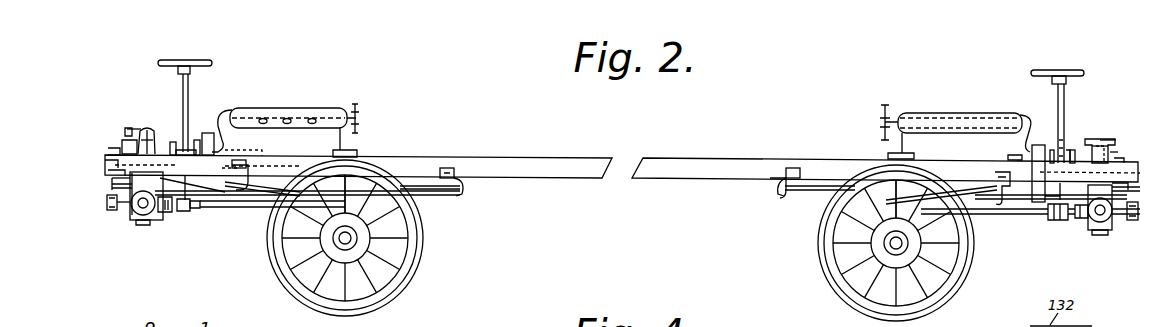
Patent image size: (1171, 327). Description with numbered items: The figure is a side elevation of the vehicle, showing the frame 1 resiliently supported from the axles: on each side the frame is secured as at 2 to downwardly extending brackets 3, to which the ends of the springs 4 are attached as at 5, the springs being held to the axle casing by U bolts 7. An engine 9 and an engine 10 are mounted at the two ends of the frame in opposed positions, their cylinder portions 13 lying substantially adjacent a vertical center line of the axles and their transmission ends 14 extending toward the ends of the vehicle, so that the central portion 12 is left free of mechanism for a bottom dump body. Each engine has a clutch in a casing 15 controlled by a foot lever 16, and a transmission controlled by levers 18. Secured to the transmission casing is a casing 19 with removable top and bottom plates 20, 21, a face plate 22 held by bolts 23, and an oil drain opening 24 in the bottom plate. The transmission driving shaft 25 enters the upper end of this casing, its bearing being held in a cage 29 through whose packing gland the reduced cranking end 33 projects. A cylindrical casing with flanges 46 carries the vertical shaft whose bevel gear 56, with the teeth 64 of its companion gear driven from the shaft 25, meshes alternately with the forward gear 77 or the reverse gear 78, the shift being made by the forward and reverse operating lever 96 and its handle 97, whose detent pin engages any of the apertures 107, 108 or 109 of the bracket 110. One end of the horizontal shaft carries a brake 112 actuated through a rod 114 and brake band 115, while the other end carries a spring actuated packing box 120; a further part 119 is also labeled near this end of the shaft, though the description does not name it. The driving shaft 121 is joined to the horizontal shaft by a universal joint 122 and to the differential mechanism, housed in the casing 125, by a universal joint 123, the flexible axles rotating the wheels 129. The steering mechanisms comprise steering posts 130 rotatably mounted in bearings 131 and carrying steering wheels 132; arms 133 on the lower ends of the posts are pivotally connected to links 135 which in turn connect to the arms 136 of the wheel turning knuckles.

The frame 1 is at (661, 158).
The securing point of brackets to frame 2 is at (246, 166).
The downwardly extending brackets 3 is at (249, 180).
The springs 4 is at (442, 192).
The spring attachment points 5 is at (232, 196).
The U bolts 7 is at (360, 188).
The engine 9 is at (280, 108).
The engine 10 is at (940, 113).
The central portion 12 is at (1080, 183).
The cylinder portions 13 is at (352, 108).
The transmission end 14 is at (172, 142).
The clutch casing 15 is at (234, 112).
The foot lever 16 is at (209, 133).
The transmission levers 18 is at (197, 140).
The casing 19 is at (112, 179).
The top removable plate 20 is at (1112, 158).
The bottom removable plate 21 is at (163, 213).
The face plate 22 is at (113, 187).
The bolts 23 is at (136, 220).
The opening 24 is at (143, 222).
The transmission driving shaft 25 is at (110, 150).
The bearing cage 29 is at (108, 172).
The reduced cranking end 33 is at (106, 162).
The flanges 46 is at (143, 129).
The bevel gear 56 is at (192, 191).
The teeth 64 is at (131, 216).
The forward gear 77 is at (145, 226).
The reverse gear 78 is at (183, 213).
The forward and reverse operating lever 96 is at (1104, 144).
The handle 97 is at (151, 130).
The aperture 107 is at (128, 128).
The aperture 108 is at (139, 127).
The aperture 109 is at (1106, 138).
The bracket 110 is at (128, 140).
The brake 112 is at (107, 205).
The rod 114 is at (110, 183).
The brake band 115 is at (117, 208).
The rod 119 is at (1067, 145).
The spring actuated packing box 120 is at (180, 212).
The driving shaft 121 is at (222, 208).
The universal joint 122 is at (195, 209).
The universal joint 123 is at (283, 257).
The casing 125 is at (404, 262).
The wheels 129 is at (401, 292).
The steering posts 130 is at (189, 94).
The bearings 131 is at (238, 150).
The steering wheels 132 is at (191, 59).
The arms 133 is at (229, 163).
The links 135 is at (267, 192).
The arms 136 is at (392, 227).